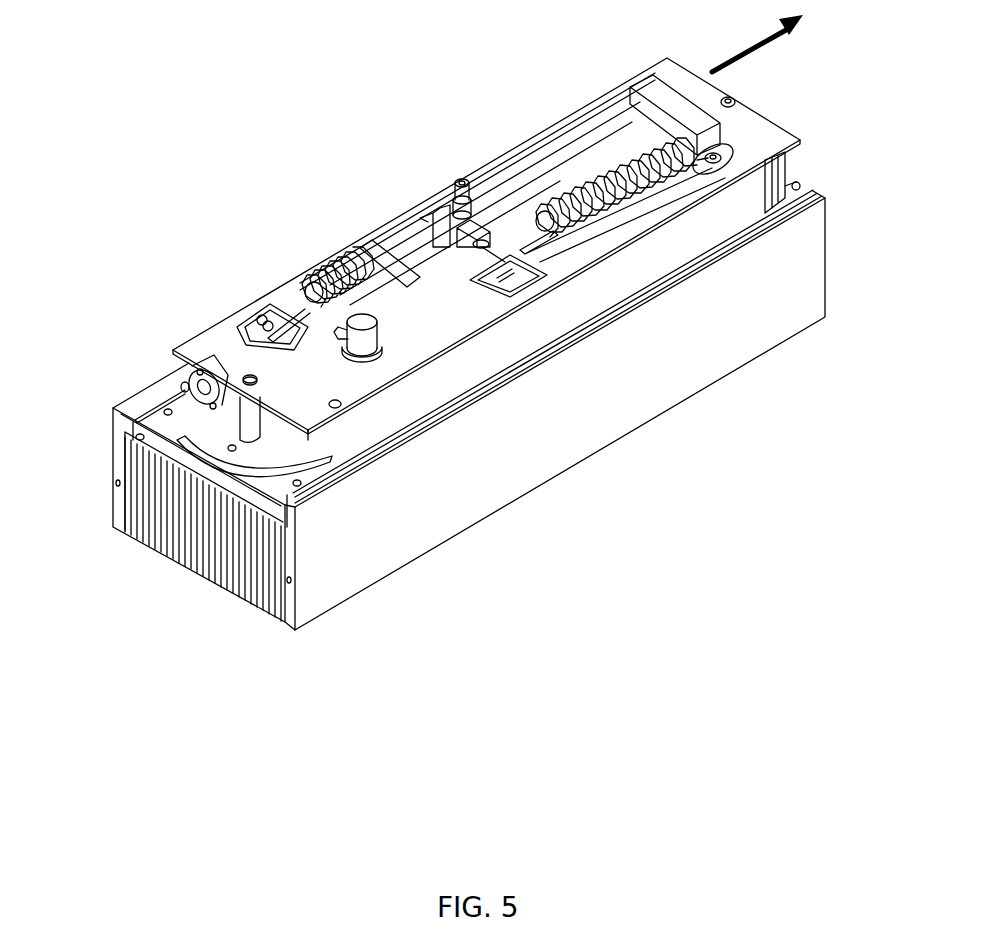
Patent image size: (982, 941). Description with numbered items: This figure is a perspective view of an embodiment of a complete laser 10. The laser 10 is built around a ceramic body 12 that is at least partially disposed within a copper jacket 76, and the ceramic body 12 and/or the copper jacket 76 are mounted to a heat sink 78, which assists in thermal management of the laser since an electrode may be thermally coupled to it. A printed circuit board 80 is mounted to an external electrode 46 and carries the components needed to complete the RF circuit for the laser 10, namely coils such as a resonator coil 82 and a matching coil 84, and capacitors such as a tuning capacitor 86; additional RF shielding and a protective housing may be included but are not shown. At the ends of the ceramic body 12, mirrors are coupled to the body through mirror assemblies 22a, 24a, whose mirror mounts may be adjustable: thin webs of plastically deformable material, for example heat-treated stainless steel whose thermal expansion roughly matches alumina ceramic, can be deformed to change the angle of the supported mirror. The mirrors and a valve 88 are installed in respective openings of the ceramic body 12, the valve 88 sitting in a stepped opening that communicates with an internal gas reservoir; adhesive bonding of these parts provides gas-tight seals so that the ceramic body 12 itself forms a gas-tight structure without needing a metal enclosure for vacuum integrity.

The laser 10 is at (190, 97).
The ceramic body 12 is at (343, 427).
The mirror assembly 22a is at (183, 388).
The mirror assembly 24a is at (790, 170).
The external electrode 46 is at (549, 160).
The copper jacket 76 is at (567, 300).
The heat sink 78 is at (533, 470).
The printed circuit board 80 is at (190, 337).
The resonator coil 82 is at (305, 270).
The matching coil 84 is at (622, 197).
The tuning capacitor 86 is at (462, 183).
The valve 88 is at (367, 343).